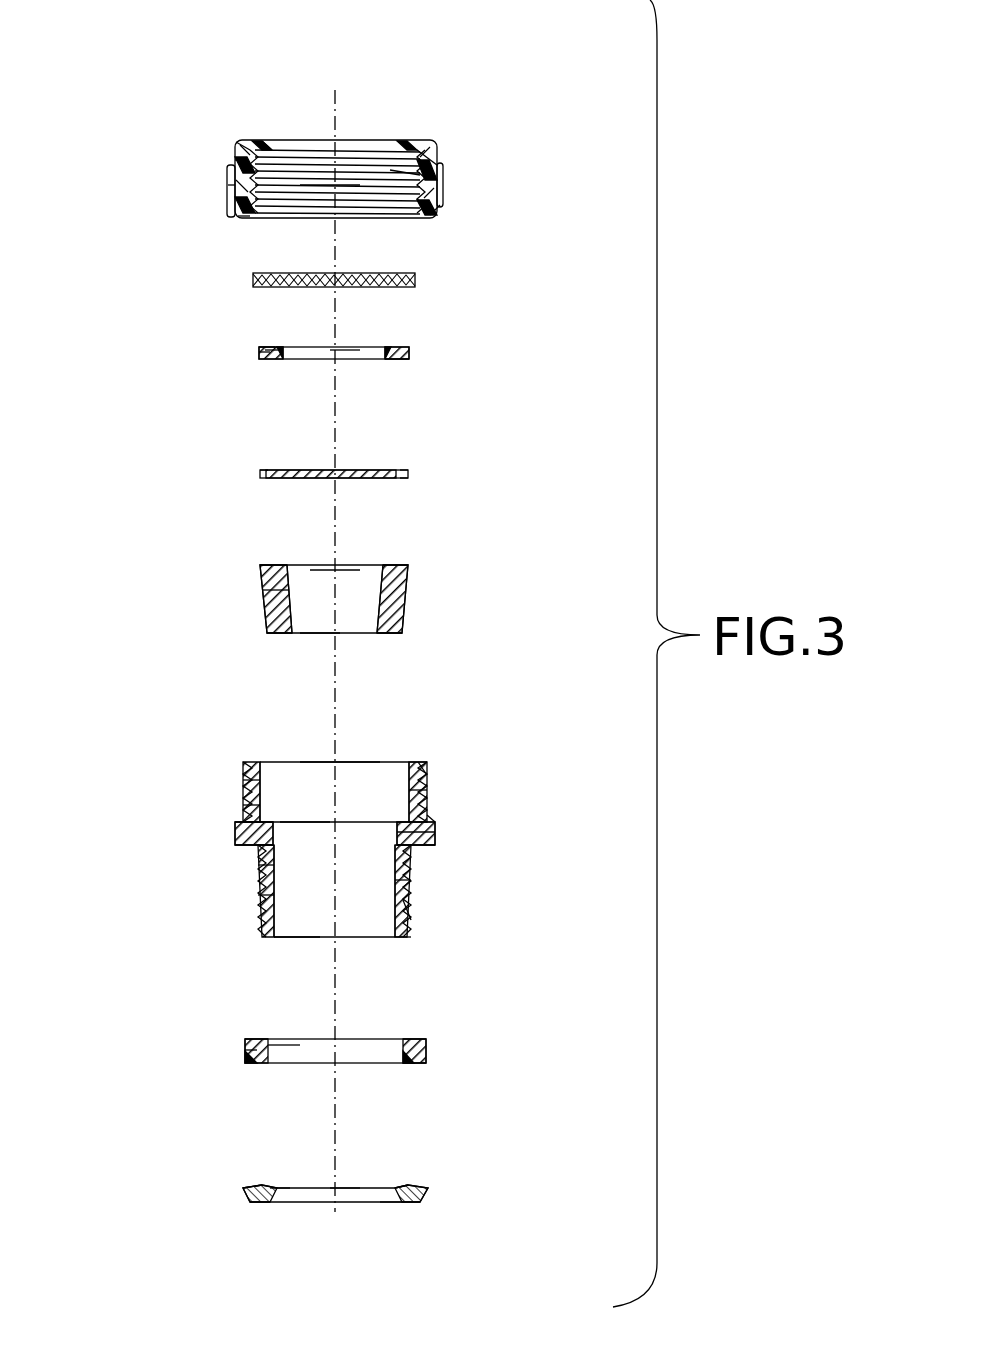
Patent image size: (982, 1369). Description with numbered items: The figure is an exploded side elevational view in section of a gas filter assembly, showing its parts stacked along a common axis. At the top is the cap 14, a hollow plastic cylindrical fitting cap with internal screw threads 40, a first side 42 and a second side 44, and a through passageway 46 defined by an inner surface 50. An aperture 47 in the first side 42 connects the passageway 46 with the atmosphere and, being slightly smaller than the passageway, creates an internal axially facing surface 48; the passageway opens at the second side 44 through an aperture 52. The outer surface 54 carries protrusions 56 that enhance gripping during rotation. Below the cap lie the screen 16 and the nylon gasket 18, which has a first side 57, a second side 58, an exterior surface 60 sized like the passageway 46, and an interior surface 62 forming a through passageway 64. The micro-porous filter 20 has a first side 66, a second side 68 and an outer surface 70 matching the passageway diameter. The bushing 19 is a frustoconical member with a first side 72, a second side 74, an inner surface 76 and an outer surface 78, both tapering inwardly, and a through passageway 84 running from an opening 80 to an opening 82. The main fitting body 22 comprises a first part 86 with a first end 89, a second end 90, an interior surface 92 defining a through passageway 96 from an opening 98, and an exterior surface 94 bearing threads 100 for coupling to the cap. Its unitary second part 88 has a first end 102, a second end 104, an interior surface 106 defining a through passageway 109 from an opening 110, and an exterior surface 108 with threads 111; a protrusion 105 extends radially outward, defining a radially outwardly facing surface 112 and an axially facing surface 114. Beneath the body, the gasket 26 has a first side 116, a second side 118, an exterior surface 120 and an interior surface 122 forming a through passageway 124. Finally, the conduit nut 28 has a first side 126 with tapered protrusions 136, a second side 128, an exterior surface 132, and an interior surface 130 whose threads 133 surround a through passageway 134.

The cap 14 is at (240, 132).
The screen 16 is at (415, 278).
The nylon gasket 18 is at (420, 350).
The bushing 19 is at (412, 605).
The micro-porous filter 20 is at (255, 474).
The main fitting body 22 is at (232, 824).
The gasket 26 is at (434, 1041).
The conduit nut 28 is at (243, 1190).
The internal screw threads 40 is at (423, 170).
The first side 42 is at (405, 142).
The second side 44 is at (238, 216).
The through passageway 46 is at (352, 185).
The aperture 47 is at (275, 148).
The internal axially facing surface 48 is at (430, 150).
The inner surface 50 is at (229, 185).
The aperture 52 is at (438, 221).
The outer surface 54 is at (235, 150).
The protrusions 56 is at (235, 160).
The first side 57 is at (267, 347).
The second side 58 is at (272, 357).
The exterior surface 60 is at (260, 352).
The interior surface 62 is at (390, 360).
The through passageway 64 is at (343, 350).
The first side 66 is at (404, 472).
The second side 68 is at (405, 480).
The outer surface 70 is at (260, 472).
The first side 72 is at (400, 563).
The second side 74 is at (400, 637).
The inner surface 76 is at (290, 620).
The outer surface 78 is at (262, 588).
The opening 80 is at (292, 568).
The opening 82 is at (320, 635).
The through passageway 84 is at (325, 570).
The first part 86 is at (430, 797).
The second part 88 is at (415, 910).
The first end 89 is at (415, 763).
The second end 90 is at (430, 822).
The interior surface 92 is at (402, 762).
The exterior surface 94 is at (243, 810).
The through passageway 96 is at (353, 765).
The opening 98 is at (342, 763).
The threads 100 is at (247, 783).
The first end 102 is at (260, 857).
The second end 104 is at (405, 937).
The protrusion 105 is at (437, 832).
The interior surface 106 is at (405, 882).
The exterior surface 108 is at (257, 867).
The through passageway 109 is at (298, 933).
The opening 110 is at (302, 825).
The threads 111 is at (258, 897).
The radially outwardly facing surface 112 is at (437, 847).
The axially facing surface 114 is at (236, 845).
The first side 116 is at (413, 1033).
The second side 118 is at (413, 1065).
The exterior surface 120 is at (247, 1050).
The interior surface 122 is at (270, 1038).
The through passageway 124 is at (280, 1053).
The first side 126 is at (412, 1184).
The second side 128 is at (258, 1203).
The interior surface 130 is at (390, 1203).
The exterior surface 132 is at (427, 1197).
The threads 133 is at (272, 1185).
The through passageway 134 is at (343, 1192).
The tapered protrusions 136 is at (248, 1186).